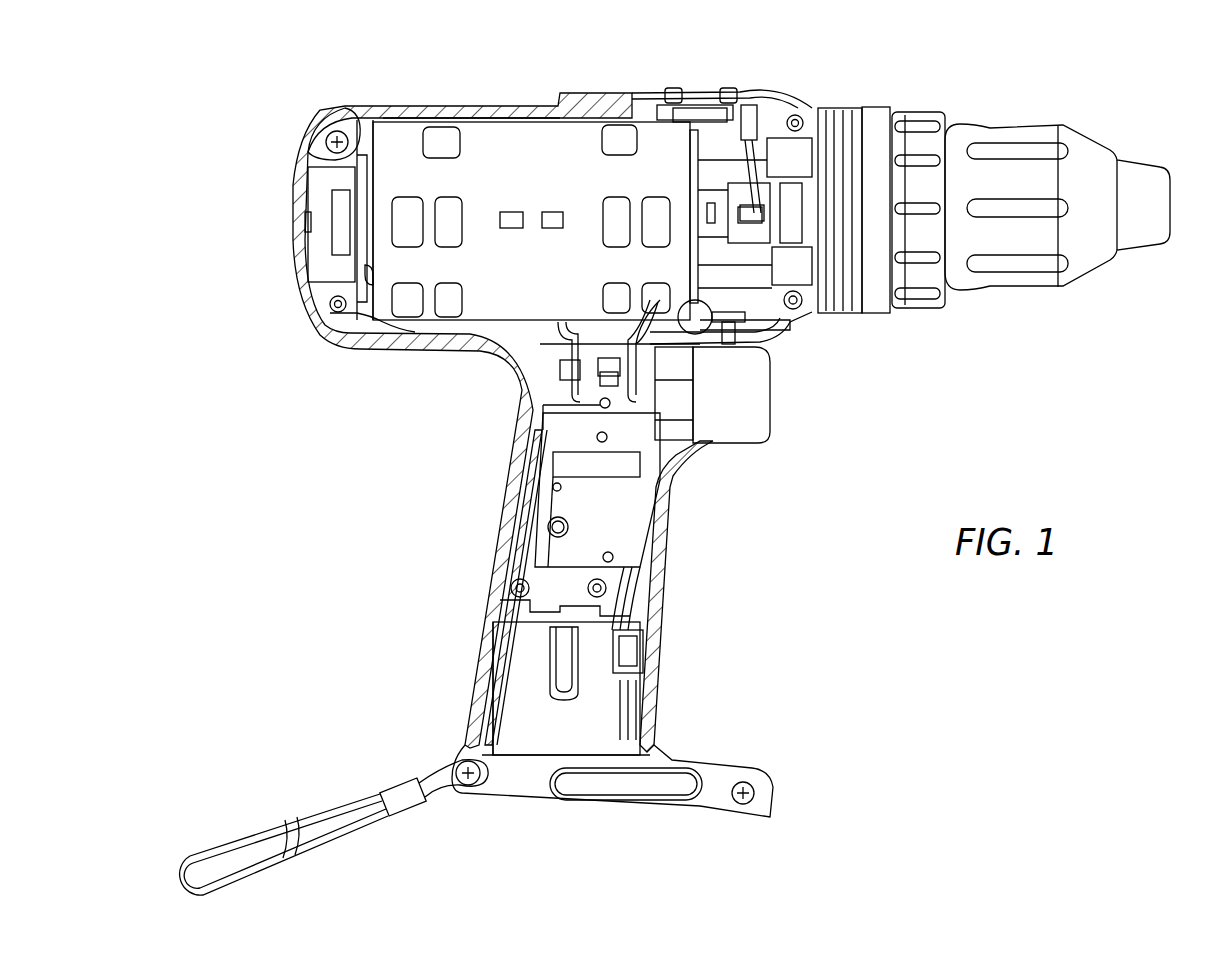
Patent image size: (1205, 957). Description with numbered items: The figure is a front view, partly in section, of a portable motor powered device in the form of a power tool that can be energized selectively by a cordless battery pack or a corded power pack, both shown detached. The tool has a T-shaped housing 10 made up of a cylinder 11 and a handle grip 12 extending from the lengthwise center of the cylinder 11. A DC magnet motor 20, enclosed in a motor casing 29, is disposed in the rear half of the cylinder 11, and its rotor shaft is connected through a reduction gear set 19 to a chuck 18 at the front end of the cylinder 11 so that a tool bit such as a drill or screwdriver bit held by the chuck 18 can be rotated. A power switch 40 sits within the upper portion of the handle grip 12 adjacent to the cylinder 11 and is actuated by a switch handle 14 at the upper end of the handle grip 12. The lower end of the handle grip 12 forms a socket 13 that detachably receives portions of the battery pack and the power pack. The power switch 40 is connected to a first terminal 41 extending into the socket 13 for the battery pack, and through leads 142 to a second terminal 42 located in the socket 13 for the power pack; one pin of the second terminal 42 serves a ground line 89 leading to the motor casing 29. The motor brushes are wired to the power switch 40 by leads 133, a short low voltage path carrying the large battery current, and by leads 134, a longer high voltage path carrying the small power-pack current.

The housing 10 is at (312, 110).
The cylinder 11 is at (538, 106).
The handle grip 12 is at (485, 602).
The socket 13 is at (540, 740).
The switch handle 14 is at (760, 418).
The chuck 18 is at (1033, 290).
The reduction gear set 19 is at (770, 165).
The DC magnet motor 20 is at (532, 287).
The motor casing 29 is at (490, 130).
The power switch 40 is at (640, 510).
The first terminal 41 is at (560, 660).
The second terminal 42 is at (635, 705).
The ground line 89 is at (505, 552).
The leads 133 is at (693, 347).
The leads 134 is at (515, 338).
The leads 142 is at (636, 598).